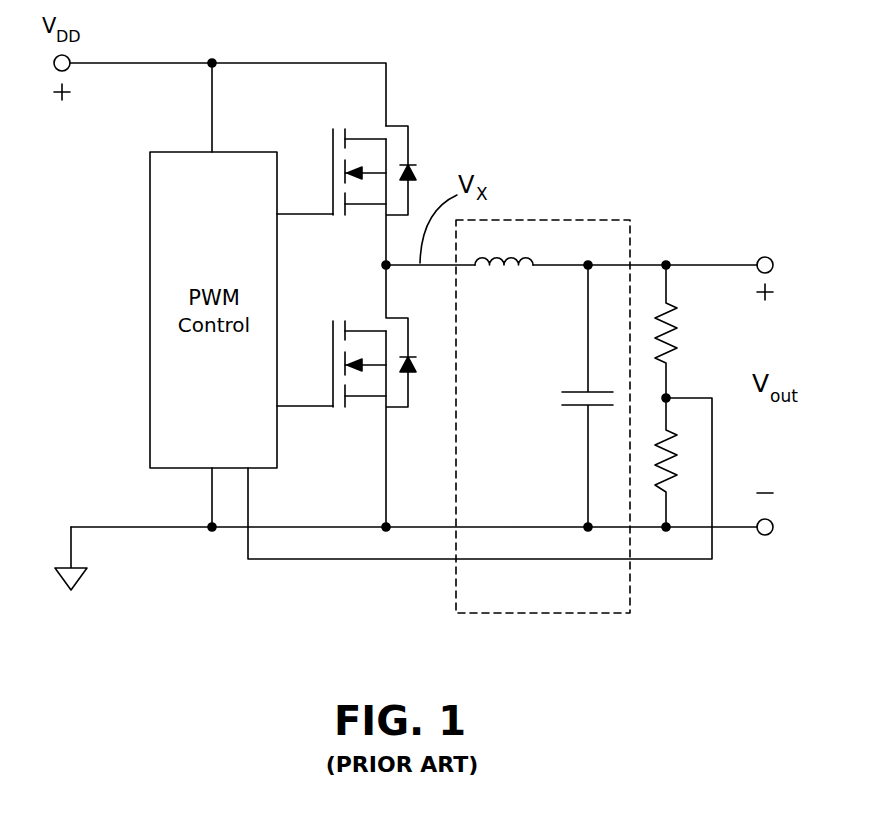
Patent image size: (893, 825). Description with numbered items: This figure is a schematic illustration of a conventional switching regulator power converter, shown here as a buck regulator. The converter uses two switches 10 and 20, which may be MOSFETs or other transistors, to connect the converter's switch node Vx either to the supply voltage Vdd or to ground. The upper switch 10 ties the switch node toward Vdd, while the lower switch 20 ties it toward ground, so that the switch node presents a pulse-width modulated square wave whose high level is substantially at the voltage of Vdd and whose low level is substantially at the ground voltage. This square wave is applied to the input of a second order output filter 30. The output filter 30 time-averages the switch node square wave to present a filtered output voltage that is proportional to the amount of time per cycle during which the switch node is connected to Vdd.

The switch 10 is at (372, 140).
The switch 20 is at (385, 398).
The second order output filter 30 is at (592, 220).